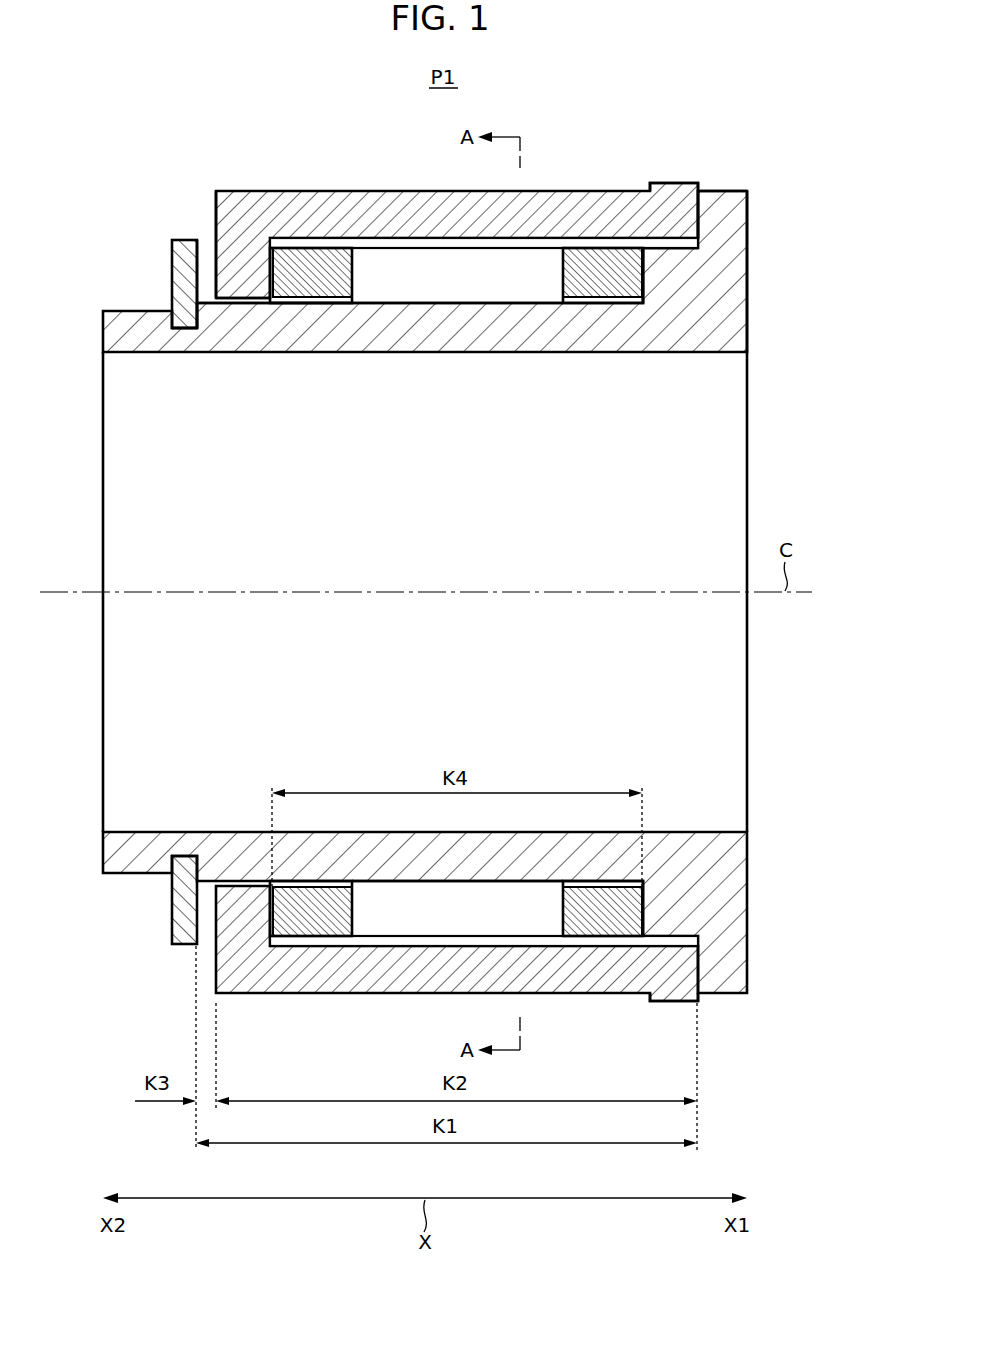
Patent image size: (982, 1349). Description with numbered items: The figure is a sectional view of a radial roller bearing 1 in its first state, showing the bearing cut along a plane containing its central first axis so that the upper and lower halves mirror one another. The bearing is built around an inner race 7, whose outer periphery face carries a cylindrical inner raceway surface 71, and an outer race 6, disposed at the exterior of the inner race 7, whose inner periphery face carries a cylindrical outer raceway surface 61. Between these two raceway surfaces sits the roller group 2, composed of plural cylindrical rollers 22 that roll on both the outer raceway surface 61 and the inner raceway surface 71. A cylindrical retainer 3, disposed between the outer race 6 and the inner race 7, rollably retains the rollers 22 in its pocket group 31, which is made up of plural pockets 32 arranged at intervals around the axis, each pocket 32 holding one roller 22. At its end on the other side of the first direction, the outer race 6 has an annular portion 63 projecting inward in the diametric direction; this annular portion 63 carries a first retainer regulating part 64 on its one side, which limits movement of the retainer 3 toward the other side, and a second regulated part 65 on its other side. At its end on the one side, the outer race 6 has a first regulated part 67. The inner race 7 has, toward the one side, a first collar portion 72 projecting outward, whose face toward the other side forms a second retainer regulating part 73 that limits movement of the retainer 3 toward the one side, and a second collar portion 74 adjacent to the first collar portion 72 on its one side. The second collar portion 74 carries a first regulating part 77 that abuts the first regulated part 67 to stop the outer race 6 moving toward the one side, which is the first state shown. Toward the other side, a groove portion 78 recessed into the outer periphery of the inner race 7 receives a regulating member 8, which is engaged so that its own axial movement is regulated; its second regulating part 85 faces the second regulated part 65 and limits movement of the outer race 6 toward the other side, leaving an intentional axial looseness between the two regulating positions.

The roller bearing 1 is at (766, 106).
The roller group 2 is at (432, 291).
The roller 22 is at (492, 286).
The retainer 3 is at (605, 276).
The pocket group 31 is at (590, 307).
The pocket 32 is at (561, 266).
The outer race 6 is at (273, 182).
The outer raceway surface 61 is at (327, 239).
The annular portion 63 is at (233, 282).
The first retainer regulating part 64 is at (268, 278).
The second regulated part 65 is at (216, 204).
The first regulated part 67 is at (701, 183).
The inner race 7 is at (752, 273).
The inner raceway surface 71 is at (325, 304).
The first collar portion 72 is at (680, 296).
The second retainer regulating part 73 is at (650, 273).
The second collar portion 74 is at (722, 236).
The first regulating part 77 is at (700, 212).
The groove portion 78 is at (183, 329).
The regulating member 8 is at (172, 245).
The second regulating part 85 is at (199, 252).